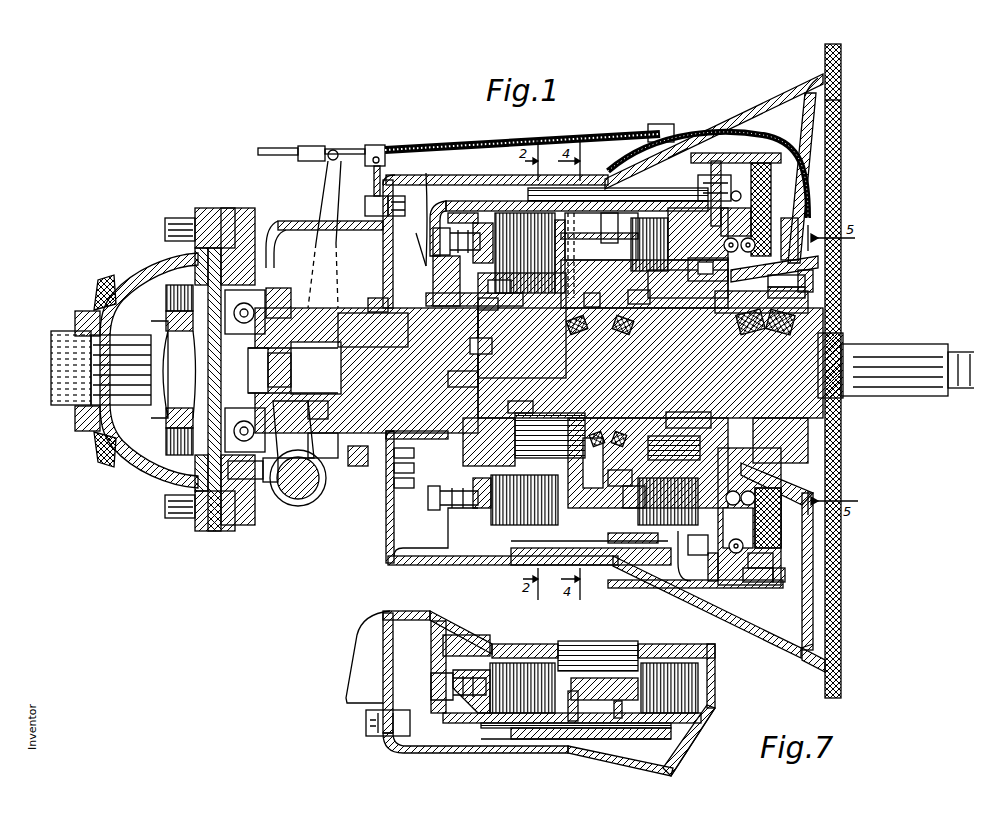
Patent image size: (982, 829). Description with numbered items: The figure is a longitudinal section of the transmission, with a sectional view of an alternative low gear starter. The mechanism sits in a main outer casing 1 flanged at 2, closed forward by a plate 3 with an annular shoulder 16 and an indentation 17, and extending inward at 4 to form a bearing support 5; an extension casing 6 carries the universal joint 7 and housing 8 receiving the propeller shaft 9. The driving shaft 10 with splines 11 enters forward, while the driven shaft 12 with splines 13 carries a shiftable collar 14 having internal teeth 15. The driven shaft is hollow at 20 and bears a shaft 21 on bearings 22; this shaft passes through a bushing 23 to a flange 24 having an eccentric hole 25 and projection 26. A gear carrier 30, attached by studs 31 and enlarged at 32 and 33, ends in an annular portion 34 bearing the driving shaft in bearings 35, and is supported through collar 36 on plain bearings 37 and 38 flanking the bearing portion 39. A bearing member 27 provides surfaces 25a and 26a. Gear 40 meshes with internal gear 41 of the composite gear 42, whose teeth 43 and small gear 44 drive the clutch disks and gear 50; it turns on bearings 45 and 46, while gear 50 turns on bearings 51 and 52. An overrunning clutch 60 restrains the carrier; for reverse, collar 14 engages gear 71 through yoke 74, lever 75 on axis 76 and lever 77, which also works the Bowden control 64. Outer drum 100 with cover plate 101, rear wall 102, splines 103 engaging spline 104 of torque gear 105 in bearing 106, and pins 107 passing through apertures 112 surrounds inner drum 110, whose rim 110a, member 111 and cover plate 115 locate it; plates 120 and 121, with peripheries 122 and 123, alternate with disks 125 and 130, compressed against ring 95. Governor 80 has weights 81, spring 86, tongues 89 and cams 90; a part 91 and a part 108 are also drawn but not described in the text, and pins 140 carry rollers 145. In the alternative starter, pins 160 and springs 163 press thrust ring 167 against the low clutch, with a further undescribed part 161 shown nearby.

In FIG. 1, the main outer casing 1 is at (745, 100).
In FIG. 1, the flange 2 is at (819, 42).
In FIG. 1, the plate 3 is at (808, 142).
In FIG. 1, the inward extension of main casing 4 is at (376, 258).
In FIG. 1, the bearing support 5 is at (392, 270).
In FIG. 1, the extension casing 6 is at (276, 222).
In FIG. 1, the universal joint mechanism 7 is at (188, 332).
In FIG. 1, the housing 8 is at (90, 282).
In FIG. 1, the propeller shaft 9 is at (66, 330).
In FIG. 1, the driving shaft 10 is at (840, 332).
In FIG. 1, the splines 11 is at (930, 340).
In FIG. 1, the driven shaft 12 is at (248, 318).
In FIG. 1, the splines 13 is at (276, 318).
In FIG. 1, the shiftable collar 14 is at (320, 275).
In FIG. 1, the internal teeth 15 is at (344, 275).
In FIG. 1, the annular shoulder 16 is at (806, 270).
In FIG. 1, the indentation 17 is at (836, 96).
In FIG. 1, the hollow forward end of driven shaft 20 is at (293, 370).
In FIG. 1, the shaft 21 is at (352, 310).
In FIG. 1, the bearings 22 is at (225, 378).
In FIG. 1, the bushing 23 is at (376, 430).
In FIG. 1, the annular concentric flange 24 is at (428, 268).
In FIG. 1, the internal bearing hole 25 is at (460, 380).
In FIG. 1, the internal bearing surfaces 25a is at (590, 297).
In FIG. 1, the external eccentric bearing projection 26 is at (489, 442).
In FIG. 1, the internal bearing surface 26a is at (579, 321).
In FIG. 1, the bearing member 27 is at (623, 320).
In FIG. 1, the gear carrier and eccentric bearing support 30 is at (629, 292).
In FIG. 1, the studs 31 is at (493, 305).
In FIG. 1, the enlargement 32 is at (499, 286).
In FIG. 1, the enlargement 33 is at (473, 346).
In FIG. 1, the annular portion 34 is at (800, 300).
In FIG. 1, the bearings 35 is at (650, 363).
In FIG. 1, the collar 36 is at (792, 238).
In FIG. 1, the plain bearing 37 is at (800, 297).
In FIG. 1, the plain bearing 38 is at (800, 275).
In FIG. 1, the annular flanged bearing portion 39 is at (800, 285).
In FIG. 1, the external gear 40 is at (688, 420).
In FIG. 1, the internal gear 41 is at (674, 448).
In FIG. 1, the composite internal-external gear and shaft 42 is at (641, 358).
In FIG. 1, the external teeth 43 is at (623, 480).
In FIG. 1, the small external gear 44 is at (581, 335).
In FIG. 1, the bearings 45 is at (607, 426).
In FIG. 1, the bearings 46 is at (518, 399).
In FIG. 1, the internal-external gear 50 is at (594, 495).
In FIG. 1, the bearing 51 is at (480, 487).
In FIG. 1, the bearing 52 is at (632, 497).
In FIG. 1, the overrunning clutch 60 is at (808, 466).
In FIG. 1, the Bowden conduit control 64 is at (602, 124).
In FIG. 1, the gear 71 is at (317, 411).
In FIG. 1, the yoke 74 is at (318, 448).
In FIG. 1, the lever 75 is at (291, 429).
In FIG. 1, the pivot axis 76 is at (302, 478).
In FIG. 1, the lever 77 is at (323, 182).
In FIG. 1, the centrifugal governor 80 is at (768, 518).
In FIG. 1, the governor weights 81 is at (774, 561).
In FIG. 1, the coil spring 86 is at (745, 577).
In FIG. 1, the tongues 89 is at (770, 575).
In FIG. 1, the cams 90 is at (750, 210).
In FIG. 1, the ring 91 is at (708, 265).
In FIG. 1, the ring 95 is at (470, 204).
In FIG. 1, the outer drum 100 is at (740, 130).
In FIG. 7, the outer drum 100 is at (485, 708).
In FIG. 1, the cover plate 101 is at (808, 550).
In FIG. 1, the rearward radial wall 102 is at (439, 503).
In FIG. 1, the helical splined opening 103 is at (406, 483).
In FIG. 1, the helical gear or spline 104 is at (380, 488).
In FIG. 1, the torque gear member 105 is at (406, 469).
In FIG. 7, the torque gear member 105 is at (428, 632).
In FIG. 1, the bearing 106 is at (406, 455).
In FIG. 1, the pins 107 is at (436, 532).
In FIG. 1, the ring 108 is at (372, 290).
In FIG. 1, the inner drum 110 is at (668, 162).
In FIG. 7, the inner drum 110 is at (704, 718).
In FIG. 1, the flanged rim 110a is at (710, 150).
In FIG. 1, the annular member 111 is at (321, 369).
In FIG. 1, the apertures 112 is at (456, 233).
In FIG. 1, the cover plate 115 is at (712, 570).
In FIG. 1, the clutch plates 120 is at (694, 556).
In FIG. 1, the clutch plates 121 is at (540, 180).
In FIG. 7, the clutch plates 121 is at (496, 722).
In FIG. 1, the inner circular periphery 122 is at (688, 284).
In FIG. 1, the inner circular periphery 123 is at (522, 325).
In FIG. 1, the toothed disks 125 is at (603, 229).
In FIG. 1, the toothed disks 130 is at (593, 554).
In FIG. 1, the pins 140 is at (600, 205).
In FIG. 1, the rollers 145 is at (660, 118).
In FIG. 7, the pins 160 is at (563, 716).
In FIG. 7, the pin 161 is at (608, 712).
In FIG. 7, the compression springs 163 is at (432, 715).
In FIG. 7, the thrust ring 167 is at (600, 665).